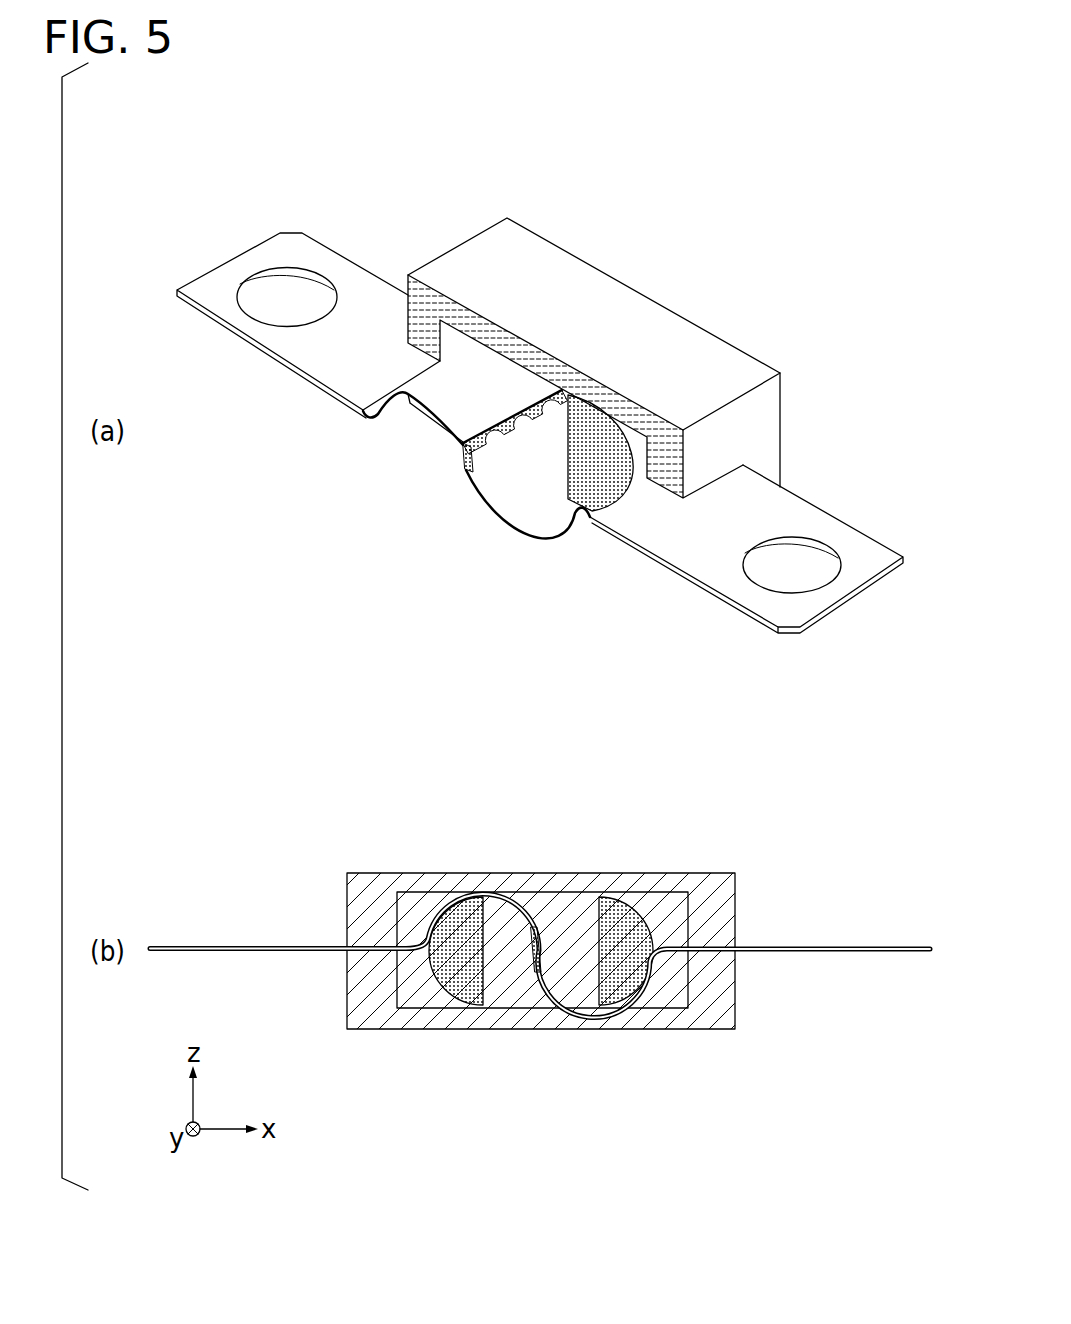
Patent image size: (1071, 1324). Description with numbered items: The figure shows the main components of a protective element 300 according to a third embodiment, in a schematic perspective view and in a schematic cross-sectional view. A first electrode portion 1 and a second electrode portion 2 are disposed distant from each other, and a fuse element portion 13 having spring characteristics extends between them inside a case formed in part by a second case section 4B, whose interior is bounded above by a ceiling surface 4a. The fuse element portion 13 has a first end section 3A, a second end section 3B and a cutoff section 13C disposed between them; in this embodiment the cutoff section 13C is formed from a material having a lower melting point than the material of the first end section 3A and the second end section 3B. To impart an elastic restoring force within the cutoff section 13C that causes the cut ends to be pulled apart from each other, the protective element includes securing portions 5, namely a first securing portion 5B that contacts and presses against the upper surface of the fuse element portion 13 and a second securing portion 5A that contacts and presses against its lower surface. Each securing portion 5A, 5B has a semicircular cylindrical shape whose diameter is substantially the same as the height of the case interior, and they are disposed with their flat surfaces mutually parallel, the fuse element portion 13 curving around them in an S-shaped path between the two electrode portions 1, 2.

The protective element 300 is at (756, 178).
The first electrode portion 1 is at (277, 262).
The second electrode portion 2 is at (856, 545).
The second case section 4B is at (631, 328).
The ceiling surface 4a is at (660, 896).
The fuse element portion 13 is at (337, 443).
The first end section 3A is at (410, 410).
The second end section 3B is at (505, 520).
The cutoff section 13C is at (452, 461).
The securing portion 5 is at (541, 743).
The second securing portion 5A is at (463, 977).
The first securing portion 5B is at (600, 457).